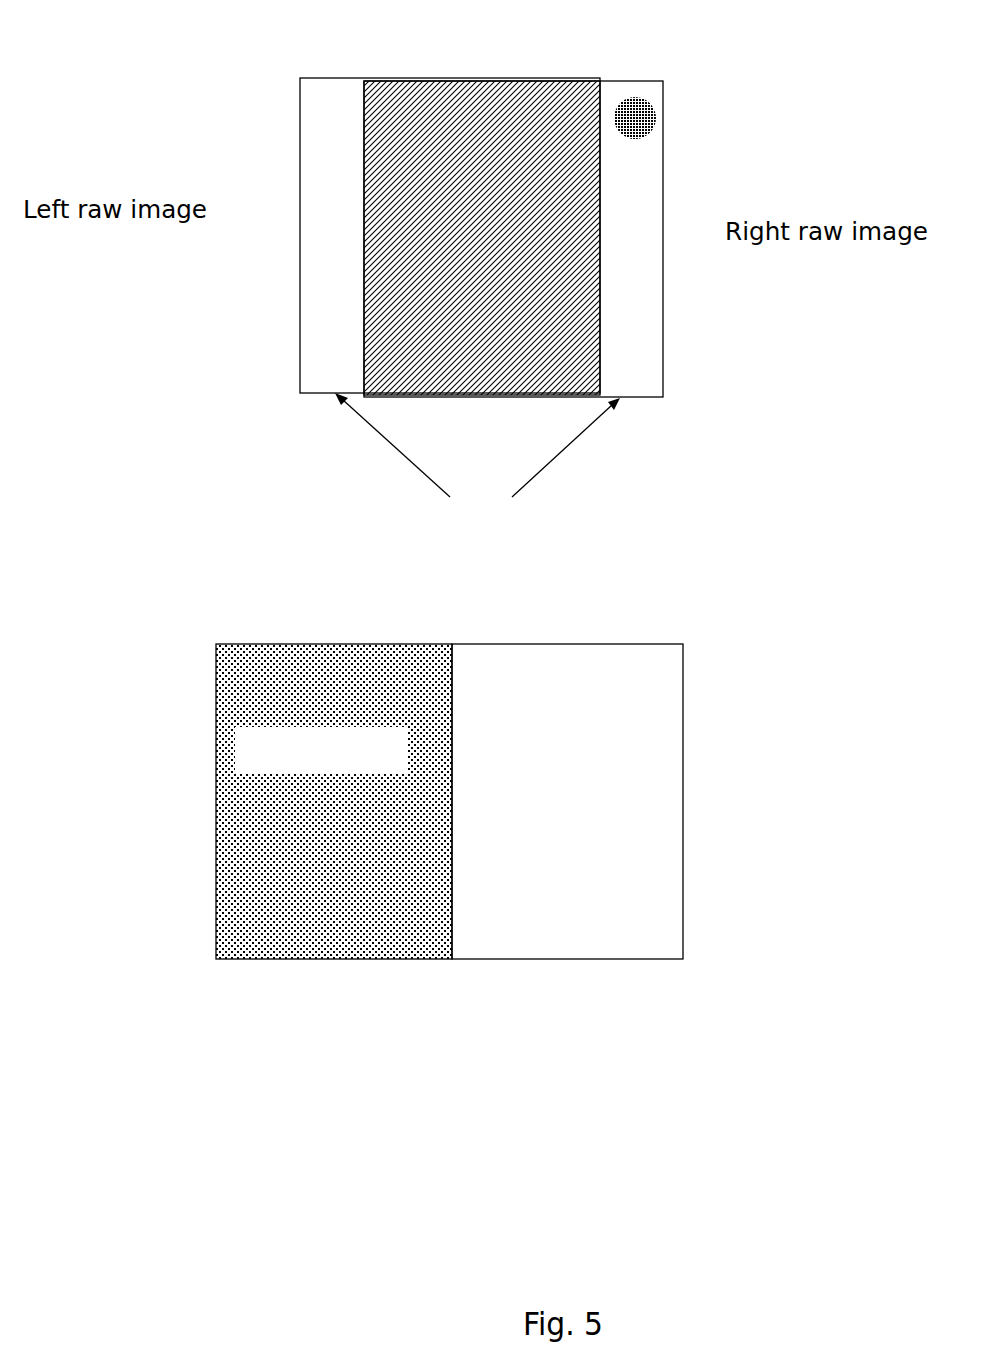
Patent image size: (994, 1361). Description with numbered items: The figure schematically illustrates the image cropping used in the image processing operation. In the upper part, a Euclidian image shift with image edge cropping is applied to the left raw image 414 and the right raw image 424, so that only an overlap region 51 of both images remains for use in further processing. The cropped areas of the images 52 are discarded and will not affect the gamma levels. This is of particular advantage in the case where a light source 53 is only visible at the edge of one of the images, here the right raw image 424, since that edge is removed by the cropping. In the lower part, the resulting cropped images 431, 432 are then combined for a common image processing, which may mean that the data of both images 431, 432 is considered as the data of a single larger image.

The left raw image 414 is at (323, 80).
The right raw image 424 is at (637, 85).
The overlap region 51 is at (483, 95).
The cropped areas of the images 52 is at (477, 465).
The light source 53 is at (655, 115).
The cropped image 431 is at (255, 650).
The cropped image 432 is at (643, 648).